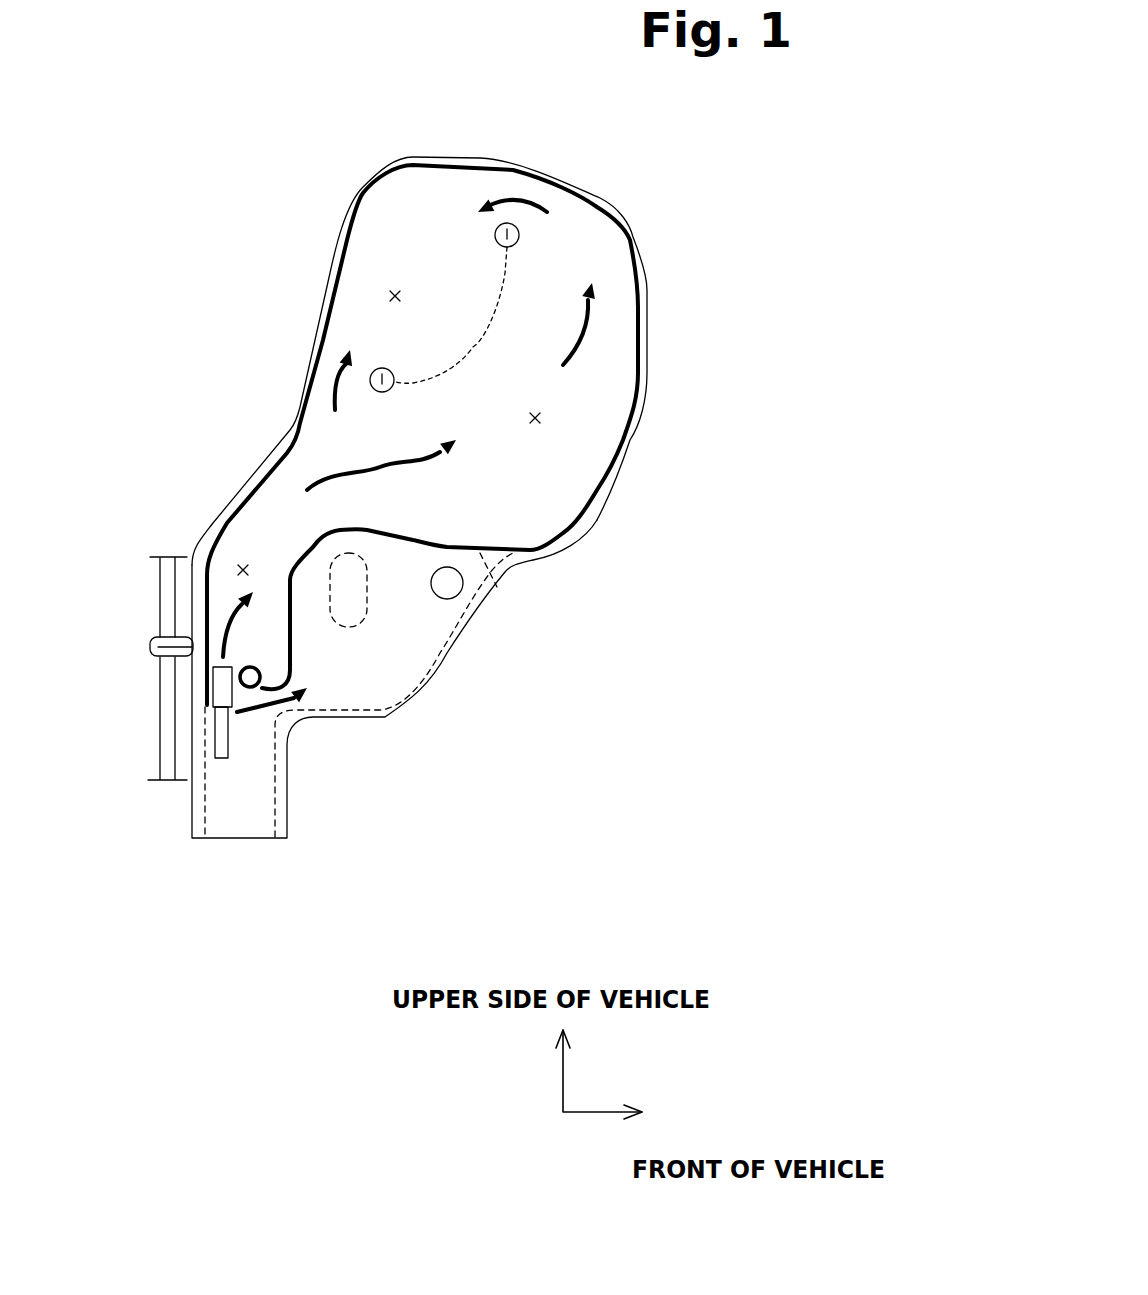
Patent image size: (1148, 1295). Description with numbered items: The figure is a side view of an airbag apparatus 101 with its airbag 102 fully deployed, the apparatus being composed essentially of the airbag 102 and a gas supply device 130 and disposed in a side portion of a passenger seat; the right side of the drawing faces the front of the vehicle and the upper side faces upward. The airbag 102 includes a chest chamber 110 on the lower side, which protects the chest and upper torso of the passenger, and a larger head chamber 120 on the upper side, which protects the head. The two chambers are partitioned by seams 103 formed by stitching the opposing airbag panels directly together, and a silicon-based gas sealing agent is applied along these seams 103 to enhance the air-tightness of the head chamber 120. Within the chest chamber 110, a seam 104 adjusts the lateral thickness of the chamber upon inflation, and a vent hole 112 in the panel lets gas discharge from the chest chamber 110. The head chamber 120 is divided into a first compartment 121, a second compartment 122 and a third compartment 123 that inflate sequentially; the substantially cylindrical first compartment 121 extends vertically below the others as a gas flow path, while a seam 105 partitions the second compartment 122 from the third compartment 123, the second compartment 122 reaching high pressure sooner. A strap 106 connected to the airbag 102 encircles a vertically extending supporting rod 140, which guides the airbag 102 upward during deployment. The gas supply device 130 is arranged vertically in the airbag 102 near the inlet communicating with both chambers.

The airbag apparatus 101 is at (291, 207).
The airbag 102 is at (452, 154).
The seams 103 is at (466, 620).
The seam 104 is at (352, 627).
The seam 105 is at (507, 268).
The strap 106 is at (150, 645).
The chest chamber 110 is at (423, 700).
The vent hole 112 is at (443, 600).
The head chamber 120 is at (651, 272).
The first compartment 121 is at (240, 568).
The second compartment 122 is at (540, 418).
The third compartment 123 is at (390, 296).
The gas supply device 130 is at (232, 736).
The supporting rod 140 is at (170, 728).